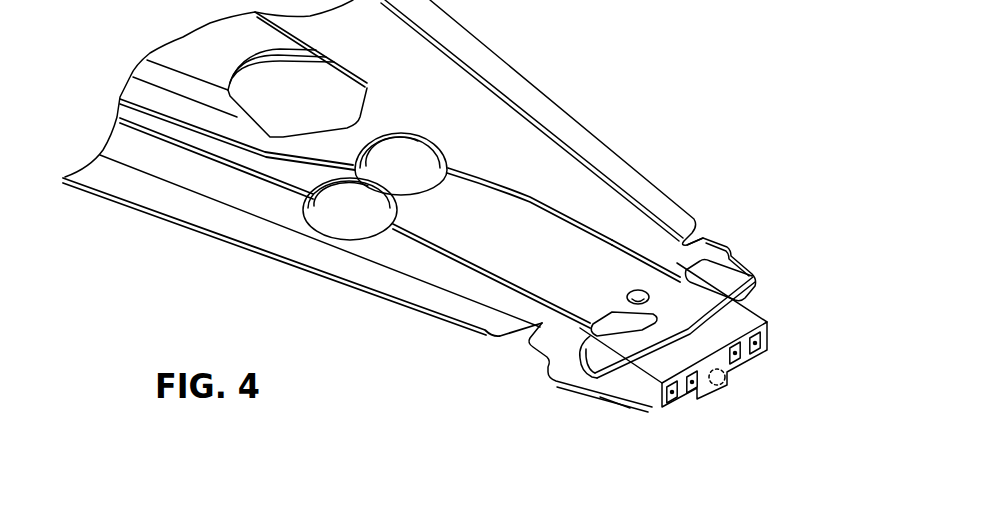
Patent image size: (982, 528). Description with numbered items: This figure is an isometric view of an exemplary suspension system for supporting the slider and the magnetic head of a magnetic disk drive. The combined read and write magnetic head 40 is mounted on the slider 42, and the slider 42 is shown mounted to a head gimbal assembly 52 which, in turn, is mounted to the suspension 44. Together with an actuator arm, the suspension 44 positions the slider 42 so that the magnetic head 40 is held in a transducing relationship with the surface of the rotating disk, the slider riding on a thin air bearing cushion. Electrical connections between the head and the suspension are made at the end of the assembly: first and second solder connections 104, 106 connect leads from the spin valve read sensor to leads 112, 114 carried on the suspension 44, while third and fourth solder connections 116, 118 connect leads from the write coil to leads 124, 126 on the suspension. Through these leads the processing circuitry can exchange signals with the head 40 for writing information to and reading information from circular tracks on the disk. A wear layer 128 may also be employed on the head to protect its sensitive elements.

The magnetic head 40 is at (727, 393).
The slider 42 is at (593, 398).
The suspension 44 is at (560, 88).
The head gimbal assembly 52 is at (658, 320).
The first solder connection 104 is at (652, 410).
The second solder connection 106 is at (757, 345).
The lead 112 is at (423, 250).
The lead 114 is at (610, 233).
The third solder connection 116 is at (692, 393).
The fourth solder connection 118 is at (737, 358).
The lead 124 is at (470, 263).
The lead 126 is at (527, 200).
The wear layer 128 is at (617, 410).